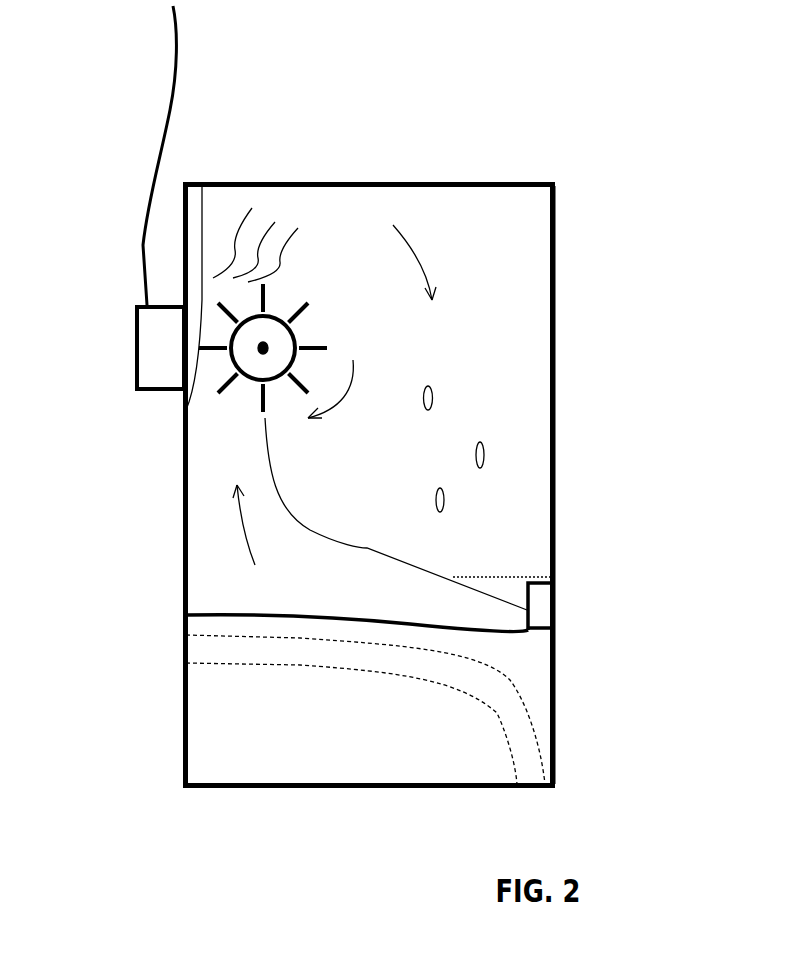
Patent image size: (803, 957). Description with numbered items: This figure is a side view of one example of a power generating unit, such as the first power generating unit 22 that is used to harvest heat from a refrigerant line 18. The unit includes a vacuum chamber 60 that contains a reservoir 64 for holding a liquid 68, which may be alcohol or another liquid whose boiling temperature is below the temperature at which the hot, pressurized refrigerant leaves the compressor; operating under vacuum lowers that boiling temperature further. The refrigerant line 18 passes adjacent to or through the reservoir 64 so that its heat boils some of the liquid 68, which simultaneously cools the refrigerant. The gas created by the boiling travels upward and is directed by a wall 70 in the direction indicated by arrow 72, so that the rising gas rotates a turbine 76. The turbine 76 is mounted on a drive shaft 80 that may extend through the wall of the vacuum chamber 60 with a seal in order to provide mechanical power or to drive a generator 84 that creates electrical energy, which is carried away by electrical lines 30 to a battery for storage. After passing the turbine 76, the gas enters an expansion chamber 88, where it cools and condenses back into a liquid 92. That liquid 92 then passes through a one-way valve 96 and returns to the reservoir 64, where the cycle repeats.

The refrigerant line 18 is at (513, 683).
The first power generating unit 22 is at (427, 182).
The electrical lines 30 is at (158, 130).
The vacuum chamber 60 is at (556, 303).
The reservoir 64 is at (230, 718).
The liquid 68 is at (203, 627).
The wall 70 is at (367, 548).
The arrow 72 is at (240, 523).
The turbine 76 is at (217, 400).
The drive shaft 80 is at (265, 346).
The generator 84 is at (150, 350).
The expansion chamber 88 is at (485, 270).
The liquid 92 is at (513, 578).
The one-way valve 96 is at (547, 602).